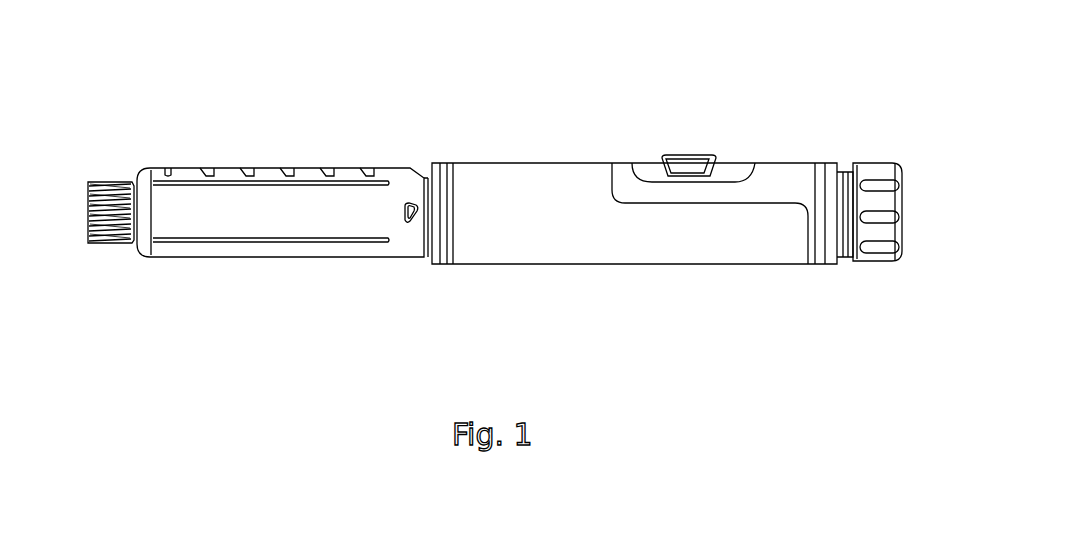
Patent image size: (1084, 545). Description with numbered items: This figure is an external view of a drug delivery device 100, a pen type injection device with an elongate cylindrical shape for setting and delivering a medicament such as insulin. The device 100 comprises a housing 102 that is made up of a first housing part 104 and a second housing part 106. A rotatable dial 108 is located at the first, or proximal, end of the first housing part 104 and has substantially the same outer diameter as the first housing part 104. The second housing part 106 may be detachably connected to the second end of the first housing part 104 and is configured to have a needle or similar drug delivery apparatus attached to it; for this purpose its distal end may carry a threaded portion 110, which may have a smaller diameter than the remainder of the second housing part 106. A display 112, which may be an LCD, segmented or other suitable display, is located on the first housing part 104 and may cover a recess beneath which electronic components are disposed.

The drug delivery device 100 is at (518, 221).
The housing 102 is at (629, 157).
The first housing part 104 is at (775, 187).
The second housing part 106 is at (323, 216).
The rotatable dial 108 is at (878, 231).
The threaded portion 110 is at (116, 213).
The display 112 is at (687, 165).